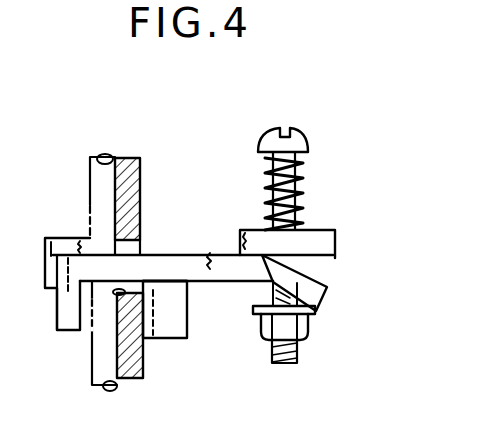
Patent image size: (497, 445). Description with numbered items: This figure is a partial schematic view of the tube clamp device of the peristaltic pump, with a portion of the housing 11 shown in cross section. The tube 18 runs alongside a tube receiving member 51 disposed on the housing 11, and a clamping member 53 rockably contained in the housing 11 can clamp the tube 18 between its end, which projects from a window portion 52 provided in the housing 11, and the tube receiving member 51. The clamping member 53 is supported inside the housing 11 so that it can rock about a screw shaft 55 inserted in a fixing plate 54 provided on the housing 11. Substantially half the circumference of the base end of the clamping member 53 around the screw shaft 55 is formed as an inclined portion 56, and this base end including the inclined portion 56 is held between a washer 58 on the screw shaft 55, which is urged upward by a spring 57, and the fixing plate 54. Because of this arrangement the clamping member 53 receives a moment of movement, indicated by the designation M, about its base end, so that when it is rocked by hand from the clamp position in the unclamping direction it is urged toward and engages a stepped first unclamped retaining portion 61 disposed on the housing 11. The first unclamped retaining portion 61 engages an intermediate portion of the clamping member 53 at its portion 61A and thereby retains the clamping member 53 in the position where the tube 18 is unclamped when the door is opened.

The housing 11 is at (142, 172).
The tube 18 is at (88, 172).
The tube receiving member 51 is at (52, 238).
The window portion 52 is at (112, 295).
The clamping member 53 is at (170, 268).
The fixing plate 54 is at (320, 238).
The screw shaft 55 is at (306, 138).
The inclined portion 56 is at (337, 273).
The spring 57 is at (302, 177).
The washer 58 is at (315, 313).
The first unclamped retaining portion 61 is at (168, 332).
The engaged portion of first unclamped retaining portion 61A is at (177, 290).
The moment of movement M is at (354, 268).